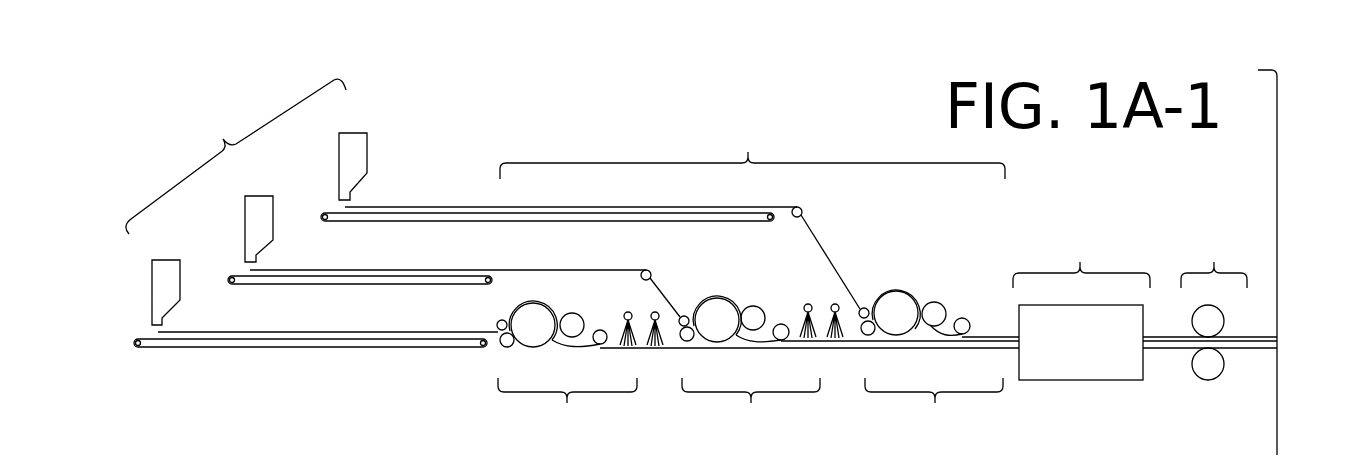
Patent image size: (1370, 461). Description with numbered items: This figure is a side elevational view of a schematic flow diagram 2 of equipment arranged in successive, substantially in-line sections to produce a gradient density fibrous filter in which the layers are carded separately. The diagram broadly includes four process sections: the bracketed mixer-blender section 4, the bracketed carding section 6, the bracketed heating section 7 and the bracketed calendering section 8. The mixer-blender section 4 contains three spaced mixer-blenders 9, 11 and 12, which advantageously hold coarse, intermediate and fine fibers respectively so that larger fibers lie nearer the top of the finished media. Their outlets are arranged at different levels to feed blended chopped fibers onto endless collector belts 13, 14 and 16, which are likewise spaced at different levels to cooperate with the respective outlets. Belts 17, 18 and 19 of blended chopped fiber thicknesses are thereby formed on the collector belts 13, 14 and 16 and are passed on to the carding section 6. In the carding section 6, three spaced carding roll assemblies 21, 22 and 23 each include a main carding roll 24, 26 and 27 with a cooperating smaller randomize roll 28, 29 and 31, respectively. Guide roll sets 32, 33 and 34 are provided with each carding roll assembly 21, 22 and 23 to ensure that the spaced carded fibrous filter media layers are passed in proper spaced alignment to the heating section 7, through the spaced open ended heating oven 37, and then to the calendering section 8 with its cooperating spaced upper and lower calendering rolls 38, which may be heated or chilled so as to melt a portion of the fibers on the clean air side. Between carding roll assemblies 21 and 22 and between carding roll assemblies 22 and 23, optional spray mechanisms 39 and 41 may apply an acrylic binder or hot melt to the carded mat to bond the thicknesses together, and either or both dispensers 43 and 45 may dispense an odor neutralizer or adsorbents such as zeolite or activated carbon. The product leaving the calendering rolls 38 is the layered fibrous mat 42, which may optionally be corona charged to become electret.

The schematic flow diagram 2 is at (682, 116).
The mixer-blender section 4 is at (236, 156).
The carding section 6 is at (752, 147).
The heating section 7 is at (1081, 256).
The calendering section 8 is at (1214, 258).
The mixer-blender 9 is at (359, 143).
The mixer-blender 11 is at (250, 215).
The mixer-blender 12 is at (158, 290).
The endless collector belt 13 is at (463, 218).
The endless collector belt 14 is at (405, 275).
The endless collector belt 16 is at (272, 346).
The belt of blended chopped fibers 17 is at (412, 207).
The belt of blended chopped fibers 18 is at (350, 268).
The belt of blended chopped fibers 19 is at (200, 333).
The carding roll assembly 21 is at (567, 408).
The carding roll assembly 22 is at (751, 408).
The carding roll assembly 23 is at (934, 408).
The main carding roll 24 is at (530, 317).
The main carding roll 26 is at (718, 303).
The main carding roll 27 is at (898, 300).
The randomize roll 28 is at (572, 320).
The randomize roll 29 is at (757, 315).
The randomize roll 31 is at (938, 308).
The guide roll set 32 is at (505, 347).
The guide roll set 33 is at (685, 341).
The guide roll set 34 is at (867, 336).
The heating oven 37 is at (1060, 373).
The calendering rolls 38 is at (1208, 378).
The spray mechanism 39 is at (656, 312).
The spray mechanism 41 is at (840, 307).
The layered fibrous mat 42 is at (1255, 348).
The dispenser 43 is at (627, 312).
The dispenser 45 is at (810, 306).